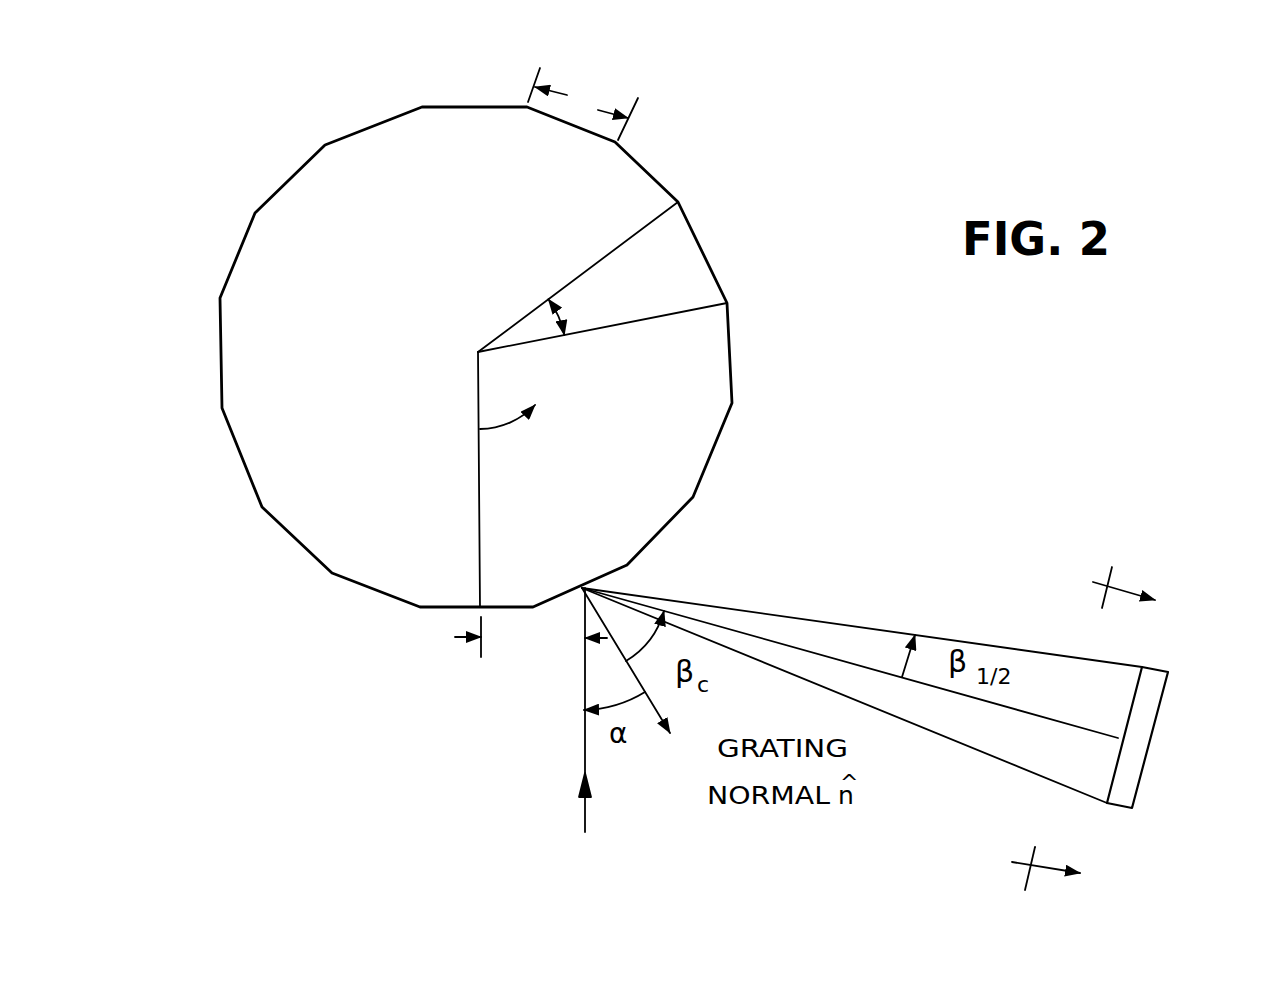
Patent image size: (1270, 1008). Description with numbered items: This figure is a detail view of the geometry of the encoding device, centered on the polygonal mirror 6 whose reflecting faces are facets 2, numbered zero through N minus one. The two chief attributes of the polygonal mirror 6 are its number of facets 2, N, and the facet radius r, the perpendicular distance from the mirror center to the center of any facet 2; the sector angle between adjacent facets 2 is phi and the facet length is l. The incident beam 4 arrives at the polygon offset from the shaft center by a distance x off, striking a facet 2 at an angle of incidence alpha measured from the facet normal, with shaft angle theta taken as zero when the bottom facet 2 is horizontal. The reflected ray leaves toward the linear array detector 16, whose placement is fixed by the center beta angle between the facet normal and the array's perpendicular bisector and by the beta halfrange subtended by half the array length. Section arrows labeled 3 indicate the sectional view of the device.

The facet 2 is at (703, 540).
The polygonal mirror 6 is at (477, 369).
The beam 4 is at (585, 810).
The linear array detector 16 is at (1158, 668).
The gradient index lens collimator 3 is at (1106, 730).